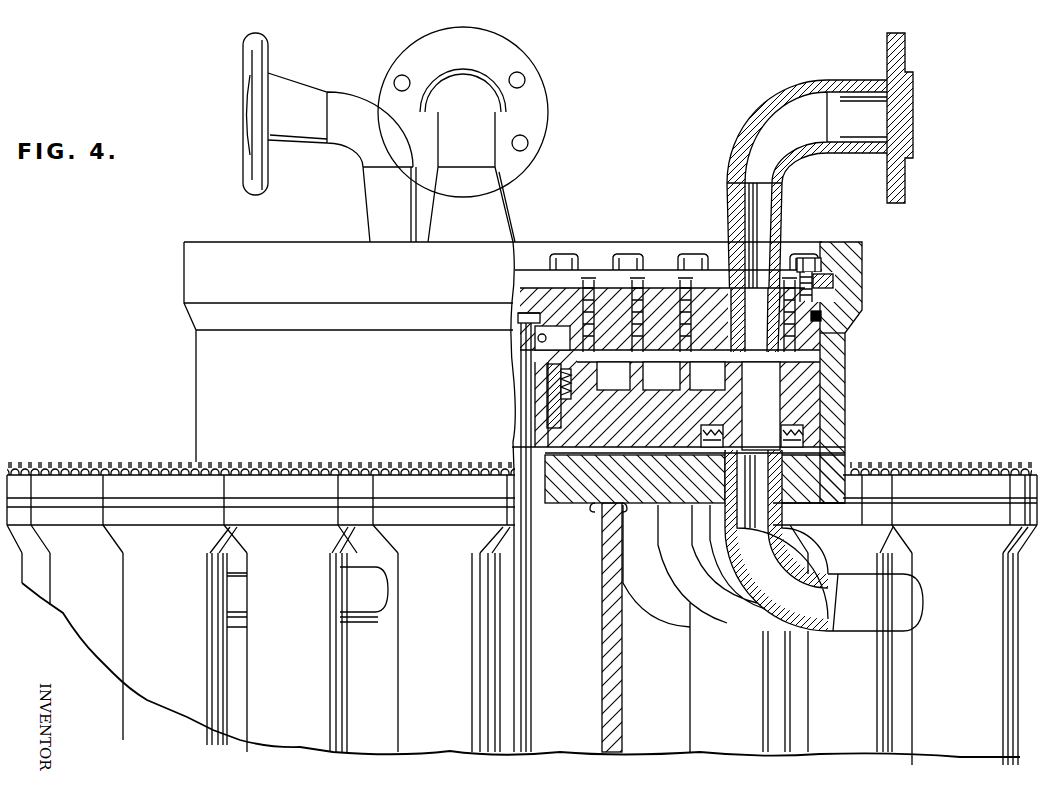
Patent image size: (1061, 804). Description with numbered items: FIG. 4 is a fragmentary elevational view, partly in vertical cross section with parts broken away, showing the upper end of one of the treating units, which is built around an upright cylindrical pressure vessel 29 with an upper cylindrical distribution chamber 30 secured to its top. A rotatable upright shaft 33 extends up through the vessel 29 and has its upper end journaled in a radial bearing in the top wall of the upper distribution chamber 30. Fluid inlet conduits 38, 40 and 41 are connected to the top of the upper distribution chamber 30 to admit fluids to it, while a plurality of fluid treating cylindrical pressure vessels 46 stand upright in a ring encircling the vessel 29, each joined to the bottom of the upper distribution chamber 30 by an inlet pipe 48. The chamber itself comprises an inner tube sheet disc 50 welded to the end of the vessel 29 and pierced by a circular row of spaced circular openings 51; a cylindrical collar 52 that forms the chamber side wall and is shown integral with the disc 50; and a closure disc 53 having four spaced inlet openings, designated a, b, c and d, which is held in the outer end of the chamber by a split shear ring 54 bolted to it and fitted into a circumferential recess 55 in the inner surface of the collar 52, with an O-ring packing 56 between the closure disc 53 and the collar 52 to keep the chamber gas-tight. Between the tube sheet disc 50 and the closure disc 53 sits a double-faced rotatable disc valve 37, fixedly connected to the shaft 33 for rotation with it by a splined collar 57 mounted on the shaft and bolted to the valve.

The upright cylindrical pressure vessel 29 is at (623, 684).
The upper cylindrical distribution chamber 30 is at (856, 399).
The rotatable upright shaft 33 is at (532, 678).
The double-faced rotatable disc valve 37 is at (642, 433).
The fluid inlet conduit 38 is at (768, 105).
The fluid inlet conduit 40 is at (335, 98).
The fluid inlet conduit 41 is at (477, 140).
The fluid treating cylindrical pressure vessel 46 is at (180, 656).
The inlet pipe 48 is at (363, 627).
The inner tube sheet disc 50 is at (835, 467).
The circular openings 51 is at (723, 455).
The cylindrical collar 52 is at (845, 373).
The closure disc 53 is at (845, 338).
The split shear ring 54 is at (833, 273).
The circumferential recess 55 is at (835, 291).
The O-ring packing 56 is at (822, 317).
The splined collar 57 is at (569, 399).